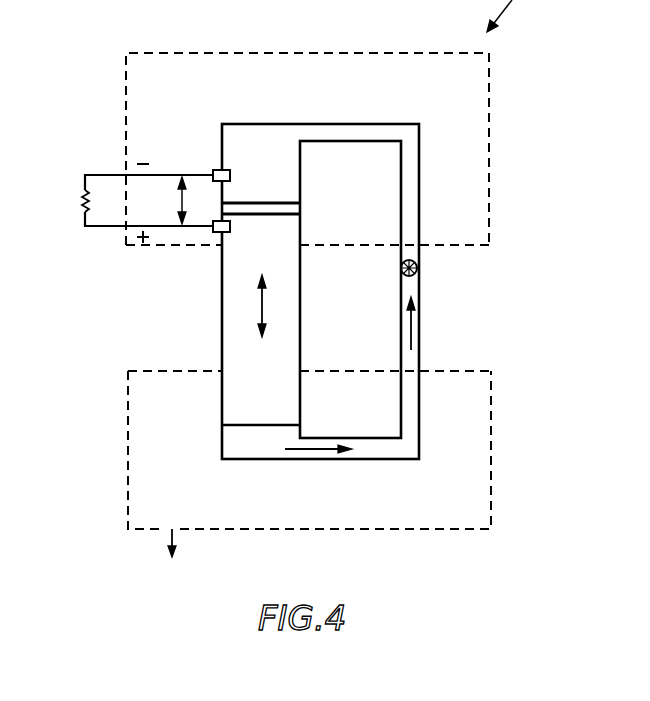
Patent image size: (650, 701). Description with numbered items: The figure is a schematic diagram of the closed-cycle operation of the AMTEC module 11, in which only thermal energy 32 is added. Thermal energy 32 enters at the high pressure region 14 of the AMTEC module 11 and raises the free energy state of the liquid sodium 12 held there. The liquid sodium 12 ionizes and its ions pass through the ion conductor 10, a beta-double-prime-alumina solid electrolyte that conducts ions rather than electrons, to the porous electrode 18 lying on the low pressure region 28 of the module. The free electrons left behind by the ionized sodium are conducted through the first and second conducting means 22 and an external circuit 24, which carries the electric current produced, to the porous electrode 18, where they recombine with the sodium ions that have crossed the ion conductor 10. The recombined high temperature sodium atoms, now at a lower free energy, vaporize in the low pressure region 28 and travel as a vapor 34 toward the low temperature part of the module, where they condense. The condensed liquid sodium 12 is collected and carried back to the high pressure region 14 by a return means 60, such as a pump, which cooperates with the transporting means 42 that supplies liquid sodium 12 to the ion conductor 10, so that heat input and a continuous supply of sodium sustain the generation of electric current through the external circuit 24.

The ion conductor 10 is at (275, 205).
The AMTEC module 11 is at (514, 16).
The liquid sodium 12 is at (413, 358).
The high pressure region 14 is at (245, 162).
The porous electrode 18 is at (274, 213).
The conducting means 22 is at (103, 228).
The external circuit 24 is at (84, 205).
The low pressure region 28 is at (277, 273).
The thermal energy 32 is at (180, 53).
The sodium vapor 34 is at (243, 357).
The transporting means 42 is at (418, 272).
The return means 60 is at (307, 479).